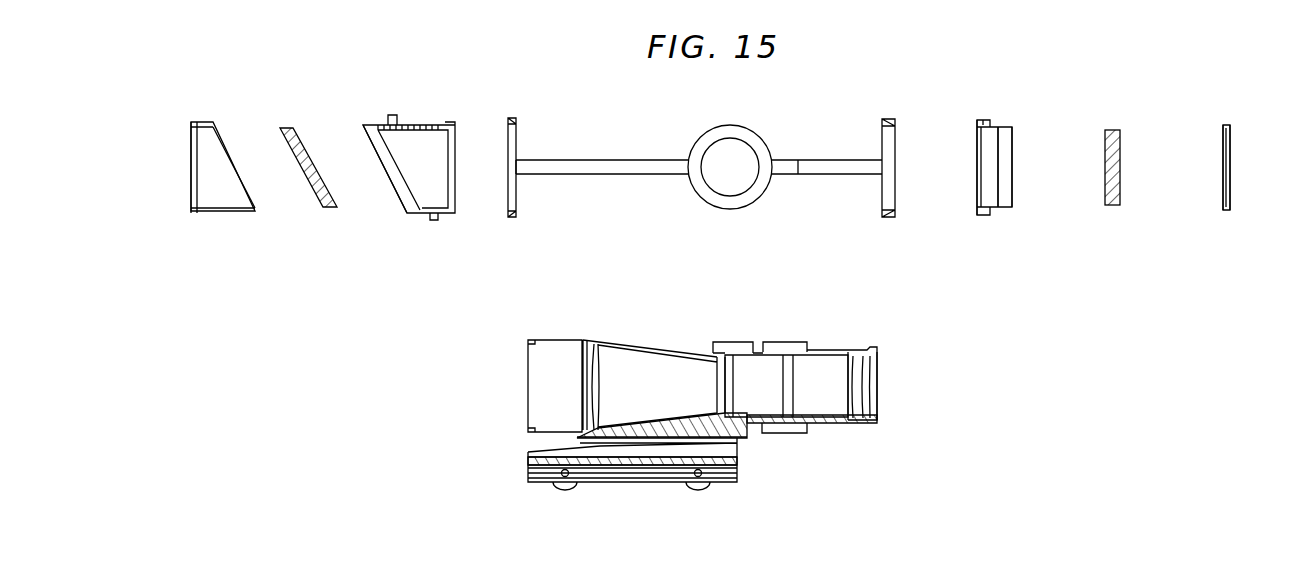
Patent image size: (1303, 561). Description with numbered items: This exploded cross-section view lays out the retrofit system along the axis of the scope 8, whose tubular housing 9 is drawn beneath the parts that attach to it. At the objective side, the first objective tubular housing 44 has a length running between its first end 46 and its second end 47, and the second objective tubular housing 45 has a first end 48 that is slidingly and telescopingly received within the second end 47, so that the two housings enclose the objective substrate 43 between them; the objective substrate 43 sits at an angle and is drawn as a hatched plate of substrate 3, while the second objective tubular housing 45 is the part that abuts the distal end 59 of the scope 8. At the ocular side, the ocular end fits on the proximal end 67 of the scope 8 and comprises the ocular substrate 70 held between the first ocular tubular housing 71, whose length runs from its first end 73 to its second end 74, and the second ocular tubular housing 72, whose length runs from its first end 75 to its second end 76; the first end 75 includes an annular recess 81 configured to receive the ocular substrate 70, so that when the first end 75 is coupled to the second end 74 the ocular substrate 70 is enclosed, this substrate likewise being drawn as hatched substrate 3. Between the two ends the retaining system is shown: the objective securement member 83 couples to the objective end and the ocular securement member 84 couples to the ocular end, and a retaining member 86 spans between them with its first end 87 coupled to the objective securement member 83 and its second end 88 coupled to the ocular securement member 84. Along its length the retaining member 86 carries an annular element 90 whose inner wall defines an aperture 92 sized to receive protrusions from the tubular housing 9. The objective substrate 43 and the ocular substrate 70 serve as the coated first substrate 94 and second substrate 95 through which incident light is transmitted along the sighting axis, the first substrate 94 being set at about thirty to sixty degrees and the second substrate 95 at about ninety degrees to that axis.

The glass plate 3 is at (710, 173).
The scope 8 is at (683, 316).
The tubular housing 9 is at (628, 342).
The objective substrate 43 is at (288, 130).
The first objective tubular housing 44 is at (196, 122).
The second objective tubular housing 45 is at (416, 125).
The first objective tubular housing first end 46 is at (192, 201).
The first objective tubular housing second end 47 is at (236, 165).
The second objective tubular housing first end 48 is at (389, 170).
The distal end 59 is at (536, 350).
The proximal end 67 is at (873, 349).
The ocular substrate 70 is at (1112, 131).
The first ocular tubular housing 71 is at (1228, 125).
The second ocular tubular housing 72 is at (993, 125).
The first ocular tubular housing first end 73 is at (1232, 170).
The first ocular tubular housing second end 74 is at (1222, 200).
The second ocular tubular housing first end 75 is at (1013, 173).
The second ocular tubular housing second end 76 is at (978, 201).
The annular recess 81 is at (1004, 191).
The objective securement member 83 is at (516, 216).
The ocular securement member 84 is at (893, 218).
The retaining member 86 is at (586, 170).
The retaining member first end 87 is at (517, 160).
The retaining member second end 88 is at (881, 158).
The annular element 90 is at (716, 207).
The aperture 92 is at (720, 181).
The first substrate 94 is at (303, 145).
The second substrate 95 is at (1125, 144).